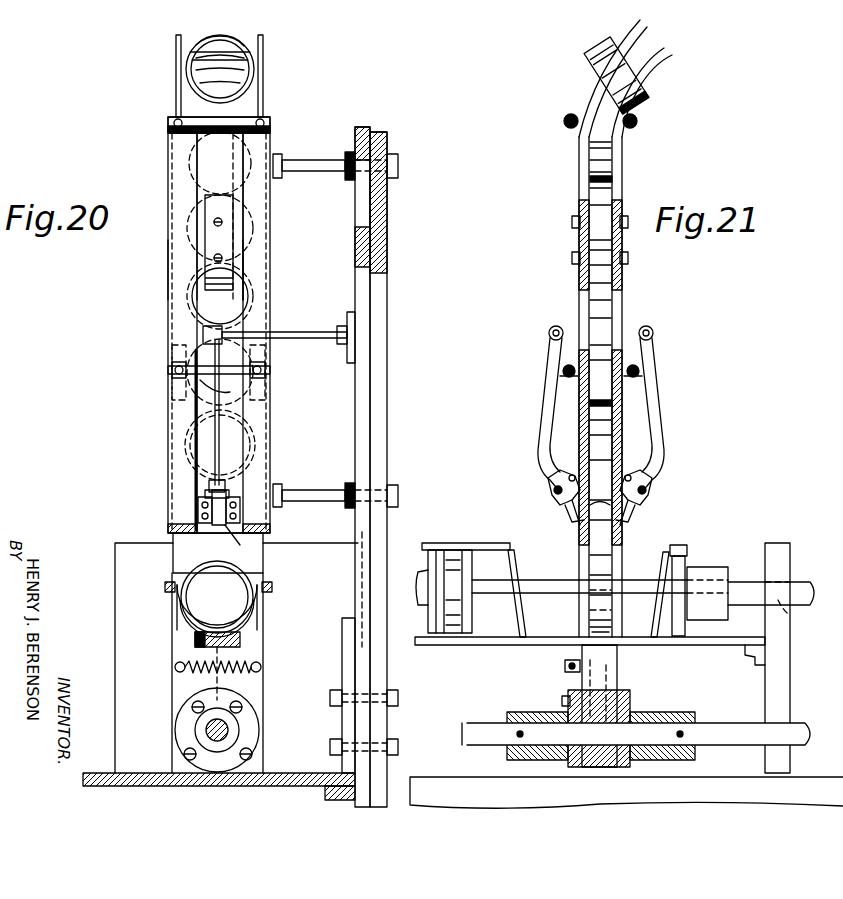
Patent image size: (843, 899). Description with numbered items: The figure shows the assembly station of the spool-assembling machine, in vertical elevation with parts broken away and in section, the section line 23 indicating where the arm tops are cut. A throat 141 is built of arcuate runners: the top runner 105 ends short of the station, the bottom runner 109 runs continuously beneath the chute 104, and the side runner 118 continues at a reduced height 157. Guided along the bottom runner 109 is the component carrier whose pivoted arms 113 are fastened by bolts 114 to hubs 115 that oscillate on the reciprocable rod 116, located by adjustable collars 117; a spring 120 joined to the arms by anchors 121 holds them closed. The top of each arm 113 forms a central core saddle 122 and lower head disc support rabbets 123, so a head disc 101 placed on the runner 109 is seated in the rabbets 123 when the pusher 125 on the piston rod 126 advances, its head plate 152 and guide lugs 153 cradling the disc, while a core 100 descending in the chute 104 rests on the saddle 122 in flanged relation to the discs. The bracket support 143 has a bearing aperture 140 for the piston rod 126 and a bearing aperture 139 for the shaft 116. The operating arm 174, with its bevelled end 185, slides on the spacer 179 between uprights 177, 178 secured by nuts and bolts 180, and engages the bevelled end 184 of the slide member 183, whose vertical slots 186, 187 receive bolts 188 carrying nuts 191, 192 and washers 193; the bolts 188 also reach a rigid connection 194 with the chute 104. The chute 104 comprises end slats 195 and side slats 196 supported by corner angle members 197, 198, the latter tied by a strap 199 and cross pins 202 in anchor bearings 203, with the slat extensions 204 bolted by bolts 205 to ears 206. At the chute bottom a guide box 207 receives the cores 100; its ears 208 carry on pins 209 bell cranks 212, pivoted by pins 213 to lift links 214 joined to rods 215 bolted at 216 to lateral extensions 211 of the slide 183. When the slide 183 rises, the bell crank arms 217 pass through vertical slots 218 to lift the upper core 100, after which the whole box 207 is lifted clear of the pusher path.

In FIG. 20, the housing assembly 23 is at (150, 605).
In FIG. 20, the core 100 is at (254, 72).
In FIG. 21, the core 100 is at (600, 200).
In FIG. 21, the head disc 101 is at (516, 568).
In FIG. 20, the chute 104 is at (163, 207).
In FIG. 21, the chute 104 is at (634, 172).
In FIG. 21, the top runner 105 is at (440, 545).
In FIG. 20, the bottom runner 109 is at (242, 638).
In FIG. 21, the bottom runner 109 is at (722, 645).
In FIG. 20, the pivoted arm 113 is at (180, 652).
In FIG. 21, the pivoted arm 113 is at (612, 680).
In FIG. 20, the bolt 114 is at (192, 708).
In FIG. 21, the bolt 114 is at (563, 700).
In FIG. 20, the hub 115 is at (185, 756).
In FIG. 21, the hub 115 is at (655, 716).
In FIG. 20, the reciprocable rod 116 is at (205, 730).
In FIG. 21, the reciprocable rod 116 is at (728, 735).
In FIG. 20, the collar 117 is at (198, 741).
In FIG. 21, the collar 117 is at (520, 714).
In FIG. 21, the side runner 118 is at (545, 588).
In FIG. 20, the spring 120 is at (237, 672).
In FIG. 21, the spring 120 is at (572, 660).
In FIG. 20, the anchor 121 is at (175, 668).
In FIG. 21, the anchor 121 is at (570, 672).
In FIG. 20, the core saddle 122 is at (244, 605).
In FIG. 21, the core saddle 122 is at (614, 628).
In FIG. 20, the head disc support rabbet 123 is at (192, 605).
In FIG. 21, the head disc support rabbet 123 is at (587, 612).
In FIG. 21, the pusher 125 is at (712, 585).
In FIG. 21, the piston rod 126 is at (802, 590).
In FIG. 21, the bearing aperture 139 is at (792, 728).
In FIG. 21, the bearing aperture 140 is at (792, 622).
In FIG. 21, the throat 141 is at (485, 562).
In FIG. 21, the bracket support 143 is at (780, 702).
In FIG. 21, the head plate 152 is at (678, 545).
In FIG. 21, the guide lug 153 is at (683, 560).
In FIG. 21, the reduced height portion 157 is at (506, 597).
In FIG. 20, the operating arm 174 is at (362, 655).
In FIG. 20, the upright 177 is at (345, 722).
In FIG. 20, the upright 178 is at (380, 722).
In FIG. 20, the spacer 179 is at (342, 744).
In FIG. 20, the nuts and bolts 180 is at (386, 700).
In FIG. 20, the slide member 183 is at (365, 430).
In FIG. 20, the bevelled end 184 is at (362, 575).
In FIG. 20, the bevelled end 185 is at (362, 590).
In FIG. 20, the vertical slot 186 is at (362, 215).
In FIG. 20, the vertical slot 187 is at (358, 533).
In FIG. 20, the bolt 188 is at (336, 172).
In FIG. 20, the nut 191 is at (346, 150).
In FIG. 20, the nut 192 is at (392, 152).
In FIG. 20, the washer 193 is at (348, 182).
In FIG. 20, the rigid connection 194 is at (278, 180).
In FIG. 20, the end slat 195 is at (176, 44).
In FIG. 20, the side slat 196 is at (186, 64).
In FIG. 21, the side slat 196 is at (602, 50).
In FIG. 20, the corner angle member 197 is at (256, 263).
In FIG. 20, the corner angle member 198 is at (176, 270).
In FIG. 20, the strap 199 is at (205, 132).
In FIG. 21, the strap 199 is at (564, 122).
In FIG. 20, the cross pin 202 is at (230, 392).
In FIG. 21, the cross pin 202 is at (563, 371).
In FIG. 20, the anchor bearing 203 is at (172, 375).
In FIG. 21, the anchor bearing 203 is at (562, 378).
In FIG. 20, the slat extension 204 is at (215, 165).
In FIG. 21, the slat extension 204 is at (580, 280).
In FIG. 20, the bolt 205 is at (222, 222).
In FIG. 21, the bolt 205 is at (572, 258).
In FIG. 20, the ear 206 is at (213, 240).
In FIG. 20, the guide box 207 is at (176, 545).
In FIG. 21, the guide box 207 is at (616, 445).
In FIG. 20, the ear 208 is at (198, 508).
In FIG. 21, the ear 208 is at (568, 508).
In FIG. 20, the pin 209 is at (206, 493).
In FIG. 21, the pin 209 is at (556, 494).
In FIG. 20, the lateral extension 211 is at (352, 355).
In FIG. 20, the bell crank 212 is at (209, 484).
In FIG. 21, the bell crank 212 is at (550, 484).
In FIG. 21, the pin 213 is at (572, 475).
In FIG. 20, the lift link 214 is at (213, 420).
In FIG. 21, the lift link 214 is at (541, 436).
In FIG. 20, the rod 215 is at (316, 318).
In FIG. 21, the rod 215 is at (549, 334).
In FIG. 20, the bolt connection 216 is at (348, 333).
In FIG. 20, the arm 217 is at (247, 540).
In FIG. 21, the arm 217 is at (575, 520).
In FIG. 20, the vertical slot 218 is at (218, 525).
In FIG. 21, the vertical slot 218 is at (605, 523).